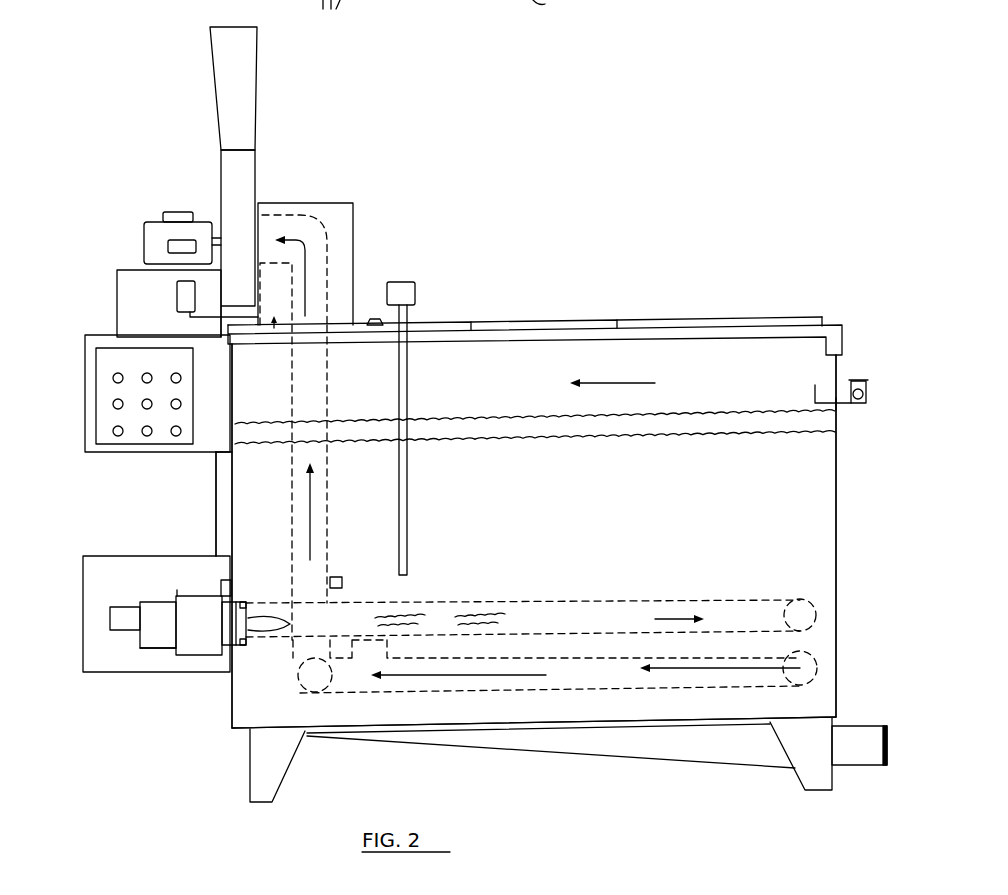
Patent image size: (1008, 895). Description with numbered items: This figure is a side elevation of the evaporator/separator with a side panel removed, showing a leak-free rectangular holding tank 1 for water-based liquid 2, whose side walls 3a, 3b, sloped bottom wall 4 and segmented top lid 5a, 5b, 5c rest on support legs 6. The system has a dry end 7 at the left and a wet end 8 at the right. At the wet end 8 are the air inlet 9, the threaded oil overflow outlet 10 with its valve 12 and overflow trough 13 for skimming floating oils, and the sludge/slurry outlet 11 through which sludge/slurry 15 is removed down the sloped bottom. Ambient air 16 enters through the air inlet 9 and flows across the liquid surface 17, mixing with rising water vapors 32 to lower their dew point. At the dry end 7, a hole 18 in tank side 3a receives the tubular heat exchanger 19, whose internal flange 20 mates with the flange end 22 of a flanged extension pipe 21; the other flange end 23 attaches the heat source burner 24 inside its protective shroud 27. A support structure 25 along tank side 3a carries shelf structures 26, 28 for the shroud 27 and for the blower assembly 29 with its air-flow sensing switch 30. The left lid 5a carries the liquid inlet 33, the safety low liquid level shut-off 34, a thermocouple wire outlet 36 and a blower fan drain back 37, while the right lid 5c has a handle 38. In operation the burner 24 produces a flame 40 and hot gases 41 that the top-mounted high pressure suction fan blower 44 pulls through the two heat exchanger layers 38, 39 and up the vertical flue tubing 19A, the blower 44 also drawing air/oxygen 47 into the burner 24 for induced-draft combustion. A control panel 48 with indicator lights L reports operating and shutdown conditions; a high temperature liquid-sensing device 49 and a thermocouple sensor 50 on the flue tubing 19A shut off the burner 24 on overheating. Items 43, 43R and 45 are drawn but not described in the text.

The holding tank 1 is at (509, 268).
The water-based liquid 2 is at (628, 515).
The tank side wall 3a is at (228, 508).
The tank side wall 3b is at (840, 470).
The bottom wall 4 is at (525, 750).
The left-most lid 5a is at (458, 322).
The center lid 5b is at (538, 321).
The right lid 5c is at (668, 316).
The support legs 6 is at (248, 785).
The dry end 7 is at (123, 481).
The wet end 8 is at (839, 513).
The air inlet 9 is at (845, 356).
The threaded oil overflow outlet 10 is at (838, 405).
The sludge/slurry outlet 11 is at (858, 766).
The valve 12 is at (866, 396).
The overflow trough 13 is at (812, 394).
The sludge/slurry 15 is at (672, 754).
The ambient air 16 is at (895, 336).
The liquid surface 17 is at (490, 417).
The hole 18 is at (243, 615).
The tubular heat exchanger 19 is at (710, 600).
The flue tubing 19A is at (365, 552).
The heat exchanger flange 20 is at (237, 650).
The flanged extension pipe 21 is at (199, 622).
The flange end 22 is at (226, 655).
The flange end 23 is at (178, 655).
The heat source burner 24 is at (158, 625).
The support structure 25 is at (216, 536).
The shelf structure 26 is at (215, 453).
The protective shroud 27 is at (83, 558).
The shelf structure 28 is at (107, 335).
The blower assembly 29 is at (212, 180).
The air-flow sensing switch 30 is at (177, 298).
The water vapors 32 is at (341, 348).
The liquid inlet 33 is at (371, 316).
The safety low liquid level shut-off 34 is at (408, 284).
The thermocouple wire outlet 36 is at (276, 294).
The blower fan drain back 37 is at (274, 306).
The heat exchanger layer / handle 38 is at (818, 600).
The heat exchanger layer 39 is at (818, 655).
The flame 40 is at (302, 623).
The hot combustion gases 41 is at (518, 620).
The air 43 is at (469, 395).
The recirculation duct 43R is at (297, 215).
The high pressure suction fan blower 44 is at (220, 156).
The flue outlet 45 is at (212, 74).
The air/oxygen 47 is at (140, 638).
The control panel 48 is at (100, 372).
The high temperature liquid-sensing device 49 is at (228, 582).
The thermocouple sensor 50 is at (386, 440).
The indicator lights L is at (114, 429).